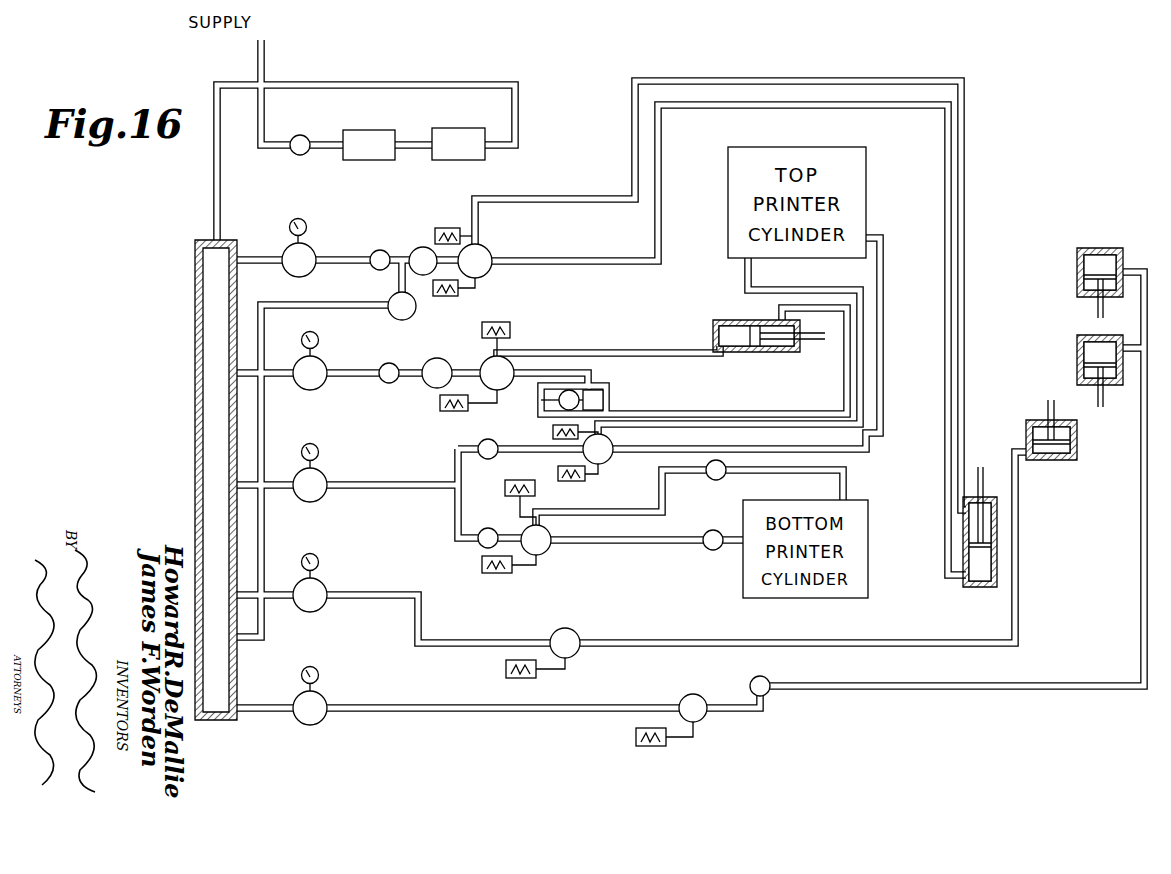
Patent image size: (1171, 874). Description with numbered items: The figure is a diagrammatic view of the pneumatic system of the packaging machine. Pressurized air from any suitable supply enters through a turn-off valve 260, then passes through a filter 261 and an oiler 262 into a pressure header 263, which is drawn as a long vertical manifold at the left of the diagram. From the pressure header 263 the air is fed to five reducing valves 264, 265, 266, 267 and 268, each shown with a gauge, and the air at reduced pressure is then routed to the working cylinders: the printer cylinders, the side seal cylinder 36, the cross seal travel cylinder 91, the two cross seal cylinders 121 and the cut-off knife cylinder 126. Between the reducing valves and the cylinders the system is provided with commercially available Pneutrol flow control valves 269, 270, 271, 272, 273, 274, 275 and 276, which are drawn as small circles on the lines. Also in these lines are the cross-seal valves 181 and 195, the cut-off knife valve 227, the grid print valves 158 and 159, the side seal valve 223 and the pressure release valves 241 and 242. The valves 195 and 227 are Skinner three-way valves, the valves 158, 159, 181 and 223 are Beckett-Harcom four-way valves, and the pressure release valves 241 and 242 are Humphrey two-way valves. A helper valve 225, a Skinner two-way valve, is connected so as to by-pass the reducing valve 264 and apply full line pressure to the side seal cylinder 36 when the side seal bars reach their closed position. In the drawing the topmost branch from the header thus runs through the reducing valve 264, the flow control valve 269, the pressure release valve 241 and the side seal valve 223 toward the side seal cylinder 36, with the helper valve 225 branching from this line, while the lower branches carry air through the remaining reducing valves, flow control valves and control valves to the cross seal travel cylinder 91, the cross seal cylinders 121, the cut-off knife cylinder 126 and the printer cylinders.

The side seal cylinder 36 is at (982, 588).
The cross seal travel cylinder 91 is at (760, 352).
The cross seal cylinders 121 is at (1077, 270).
The cut-off knife cylinder 126 is at (1052, 461).
The grid print valve 158 is at (610, 458).
The grid print valve 159 is at (546, 550).
The cross-seal valve 181 is at (508, 386).
The cross-seal valve 195 is at (704, 720).
The side seal valve 223 is at (488, 252).
The helper valve 225 is at (416, 306).
The cut-off knife valve 227 is at (575, 653).
The pressure release valve 241 is at (418, 248).
The pressure release valve 242 is at (441, 358).
The turn-off valve 260 is at (300, 135).
The filter 261 is at (360, 130).
The oiler 262 is at (448, 128).
The pressure header 263 is at (195, 400).
The reducing valve 264 is at (283, 250).
The reducing valve 265 is at (326, 362).
The reducing valve 266 is at (326, 474).
The reducing valve 267 is at (326, 584).
The reducing valve 268 is at (326, 697).
The flow control valve 269 is at (373, 252).
The flow control valve 270 is at (388, 383).
The flow control valve 271 is at (483, 440).
The flow control valve 272 is at (585, 410).
The flow control valve 273 is at (487, 528).
The flow control valve 274 is at (706, 476).
The flow control valve 275 is at (704, 546).
The flow control valve 276 is at (768, 694).